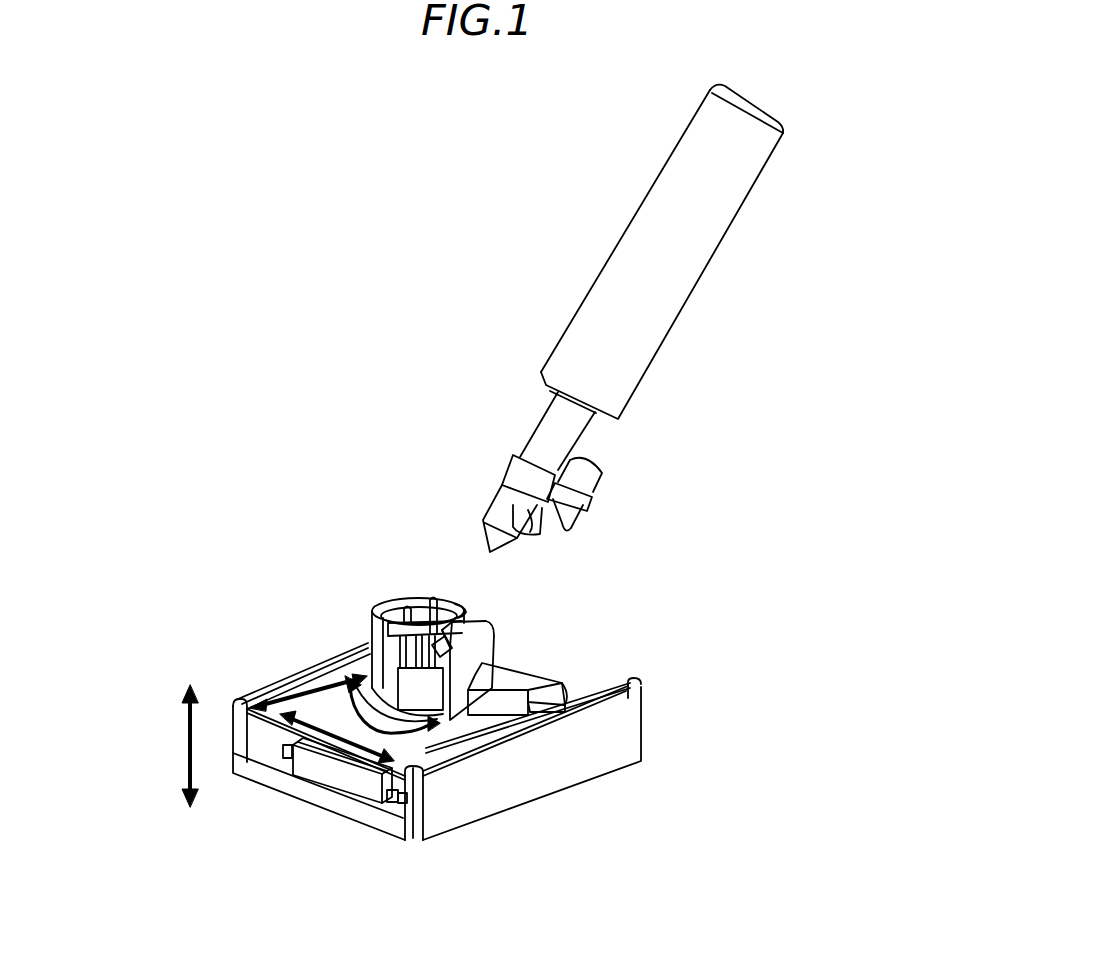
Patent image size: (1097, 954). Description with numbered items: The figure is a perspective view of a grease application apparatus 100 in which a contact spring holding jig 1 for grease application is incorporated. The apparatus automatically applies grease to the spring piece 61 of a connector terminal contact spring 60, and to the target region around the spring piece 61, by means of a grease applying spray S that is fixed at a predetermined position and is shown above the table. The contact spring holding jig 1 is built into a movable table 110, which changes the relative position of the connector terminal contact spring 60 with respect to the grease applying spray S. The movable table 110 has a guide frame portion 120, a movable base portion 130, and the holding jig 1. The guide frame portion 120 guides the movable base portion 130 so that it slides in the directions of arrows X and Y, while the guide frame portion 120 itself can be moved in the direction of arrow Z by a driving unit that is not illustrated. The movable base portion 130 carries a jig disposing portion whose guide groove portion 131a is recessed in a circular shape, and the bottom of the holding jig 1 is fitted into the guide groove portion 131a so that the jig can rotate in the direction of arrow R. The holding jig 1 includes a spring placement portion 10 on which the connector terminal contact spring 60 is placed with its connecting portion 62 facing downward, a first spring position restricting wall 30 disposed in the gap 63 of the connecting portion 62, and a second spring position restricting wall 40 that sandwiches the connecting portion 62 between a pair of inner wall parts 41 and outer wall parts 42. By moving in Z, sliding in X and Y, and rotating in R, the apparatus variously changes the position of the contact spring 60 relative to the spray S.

The contact spring holding jig for grease application 1 is at (378, 541).
The spring placement portion 10 is at (489, 640).
The first spring position restricting wall 30 is at (544, 674).
The second spring position restricting wall 40 is at (417, 623).
The inner wall parts 41 is at (466, 593).
The outer wall parts 42 is at (400, 597).
The connector terminal contact spring 60 is at (466, 582).
The spring piece 61 is at (470, 612).
The connecting portion 62 is at (450, 712).
The gap 63 is at (507, 702).
The grease application apparatus 100 is at (433, 228).
The movable table 110 is at (260, 704).
The guide frame portion 120 is at (455, 730).
The movable base portion 130 is at (567, 679).
The guide groove portion 131a is at (284, 700).
The grease applying spray S is at (624, 333).
The X direction X is at (276, 693).
The Y direction Y is at (362, 705).
The Z direction Z is at (183, 742).
The R direction R is at (472, 722).